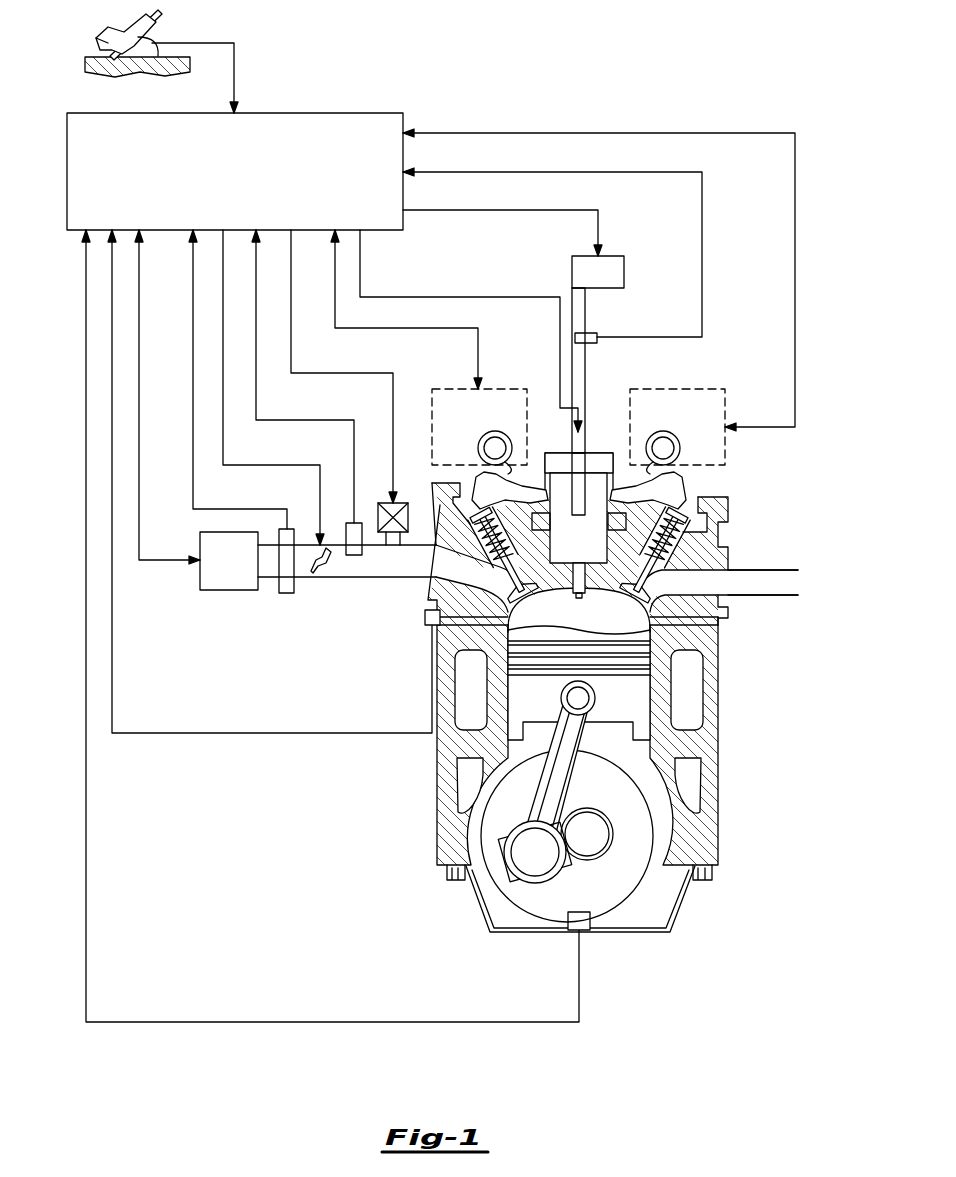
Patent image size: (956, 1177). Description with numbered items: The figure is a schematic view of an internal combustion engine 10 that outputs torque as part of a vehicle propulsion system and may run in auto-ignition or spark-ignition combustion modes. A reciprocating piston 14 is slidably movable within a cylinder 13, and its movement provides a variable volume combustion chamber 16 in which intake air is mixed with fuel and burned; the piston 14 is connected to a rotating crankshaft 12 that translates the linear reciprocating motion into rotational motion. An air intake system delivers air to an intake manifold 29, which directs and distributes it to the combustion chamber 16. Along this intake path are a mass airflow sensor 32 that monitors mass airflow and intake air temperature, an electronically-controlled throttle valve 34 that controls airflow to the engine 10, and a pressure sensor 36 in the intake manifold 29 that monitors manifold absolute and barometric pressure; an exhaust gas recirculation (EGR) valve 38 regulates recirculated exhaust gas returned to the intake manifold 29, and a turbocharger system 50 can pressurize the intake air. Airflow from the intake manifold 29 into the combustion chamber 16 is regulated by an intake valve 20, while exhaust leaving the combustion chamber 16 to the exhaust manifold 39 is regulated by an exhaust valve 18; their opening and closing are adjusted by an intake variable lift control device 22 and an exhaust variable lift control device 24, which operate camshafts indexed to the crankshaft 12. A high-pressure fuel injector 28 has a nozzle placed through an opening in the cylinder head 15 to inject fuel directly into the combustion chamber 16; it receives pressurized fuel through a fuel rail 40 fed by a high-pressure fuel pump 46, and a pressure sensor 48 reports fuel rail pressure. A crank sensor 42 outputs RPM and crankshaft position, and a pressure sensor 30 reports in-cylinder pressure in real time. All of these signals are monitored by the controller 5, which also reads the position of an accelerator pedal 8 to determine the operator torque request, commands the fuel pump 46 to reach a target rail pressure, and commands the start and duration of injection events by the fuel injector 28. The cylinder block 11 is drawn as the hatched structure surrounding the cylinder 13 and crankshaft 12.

The controller 5 is at (357, 125).
The accelerator pedal 8 is at (105, 73).
The internal combustion engine 10 is at (582, 695).
The cylinder block 11 is at (694, 745).
The crankshaft 12 is at (615, 870).
The cylinder 13 is at (658, 635).
The piston 14 is at (642, 711).
The cylinder head 15 is at (720, 508).
The combustion chamber 16 is at (568, 625).
The exhaust valve 18 is at (645, 586).
The intake valve 20 is at (512, 586).
The intake variable lift control device 22 is at (510, 399).
The exhaust variable lift control device 24 is at (712, 449).
The fuel injector 28 is at (583, 445).
The intake manifold 29 is at (421, 550).
The pressure sensor 30 is at (425, 617).
The mass airflow sensor 32 is at (290, 598).
The throttle valve 34 is at (320, 576).
The pressure sensor 36 is at (353, 558).
The exhaust gas recirculation (EGR) valve 38 is at (376, 518).
The exhaust manifold 39 is at (712, 592).
The fuel rail 40 is at (583, 312).
The crank sensor 42 is at (568, 920).
The high-pressure fuel pump 46 is at (612, 272).
The pressure sensor 48 is at (600, 338).
The turbocharger system 50 is at (205, 580).